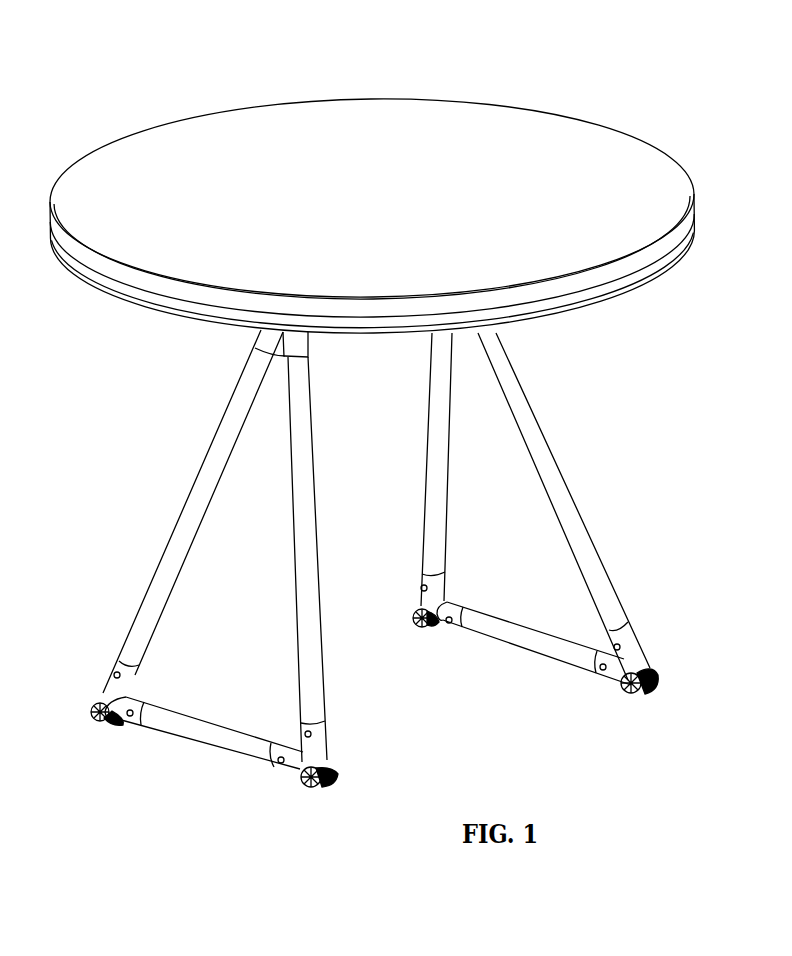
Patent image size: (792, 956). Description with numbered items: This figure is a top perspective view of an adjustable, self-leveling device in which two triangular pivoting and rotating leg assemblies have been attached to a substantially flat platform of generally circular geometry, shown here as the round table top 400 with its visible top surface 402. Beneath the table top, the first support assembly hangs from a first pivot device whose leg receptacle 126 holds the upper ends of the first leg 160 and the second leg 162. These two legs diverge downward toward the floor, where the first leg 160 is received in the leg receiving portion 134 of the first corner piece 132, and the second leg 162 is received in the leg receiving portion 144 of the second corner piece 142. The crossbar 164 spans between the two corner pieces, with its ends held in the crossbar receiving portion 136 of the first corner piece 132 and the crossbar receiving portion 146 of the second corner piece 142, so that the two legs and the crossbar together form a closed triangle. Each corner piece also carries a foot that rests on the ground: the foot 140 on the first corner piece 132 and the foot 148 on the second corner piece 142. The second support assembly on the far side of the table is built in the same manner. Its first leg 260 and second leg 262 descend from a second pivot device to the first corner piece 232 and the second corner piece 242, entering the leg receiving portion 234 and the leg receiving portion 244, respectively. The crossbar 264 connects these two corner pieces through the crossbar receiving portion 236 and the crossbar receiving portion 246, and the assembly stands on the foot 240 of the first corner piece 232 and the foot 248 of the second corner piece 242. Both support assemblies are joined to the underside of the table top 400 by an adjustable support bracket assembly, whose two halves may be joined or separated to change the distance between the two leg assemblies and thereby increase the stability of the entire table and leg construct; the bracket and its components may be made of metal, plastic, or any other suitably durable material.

The round table top 400 is at (197, 78).
The top surface 402 is at (384, 202).
The leg receptacle 126 is at (257, 341).
The first leg 160 is at (190, 505).
The second leg 162 is at (296, 555).
The crossbar 164 is at (223, 749).
The leg receiving portion 134 is at (112, 671).
The crossbar receiving portion 136 is at (136, 727).
The leg receiving portion 144 is at (330, 741).
The crossbar receiving portion 146 is at (285, 777).
The first corner piece 132 is at (95, 733).
The foot 140 is at (94, 706).
The second corner piece 142 is at (332, 794).
The foot 148 is at (331, 782).
The first leg 260 is at (557, 452).
The second leg 262 is at (422, 445).
The crossbar 264 is at (563, 663).
The leg receiving portion 234 is at (644, 648).
The crossbar receiving portion 236 is at (601, 673).
The leg receiving portion 244 is at (447, 580).
The crossbar receiving portion 246 is at (450, 628).
The foot 248 is at (413, 606).
The first corner piece 232 is at (642, 713).
The foot 240 is at (646, 692).
The second corner piece 242 is at (382, 624).